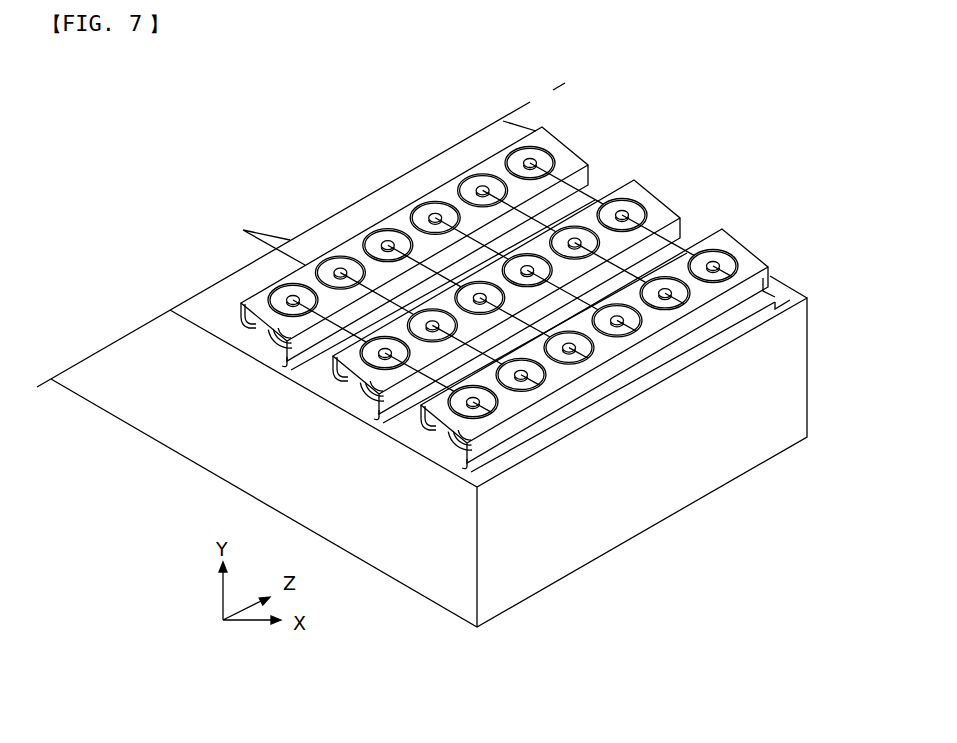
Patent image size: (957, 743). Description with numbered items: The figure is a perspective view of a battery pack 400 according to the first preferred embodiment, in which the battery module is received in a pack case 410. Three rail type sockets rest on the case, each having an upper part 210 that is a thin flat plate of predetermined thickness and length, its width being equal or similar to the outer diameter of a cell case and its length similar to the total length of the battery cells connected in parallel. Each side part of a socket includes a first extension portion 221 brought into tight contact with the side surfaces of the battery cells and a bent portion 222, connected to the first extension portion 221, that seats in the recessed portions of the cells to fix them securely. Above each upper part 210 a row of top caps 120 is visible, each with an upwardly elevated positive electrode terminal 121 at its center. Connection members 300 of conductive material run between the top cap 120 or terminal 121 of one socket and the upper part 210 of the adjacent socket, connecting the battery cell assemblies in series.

The battery pack 400 is at (177, 122).
The pack case 410 is at (800, 417).
The upper part 210 is at (660, 210).
The first extension portion 221 is at (779, 273).
The bent portion 222 is at (806, 302).
The connection member 300 is at (380, 280).
The top cap 120 is at (630, 210).
The positive electrode terminal 121 is at (712, 258).